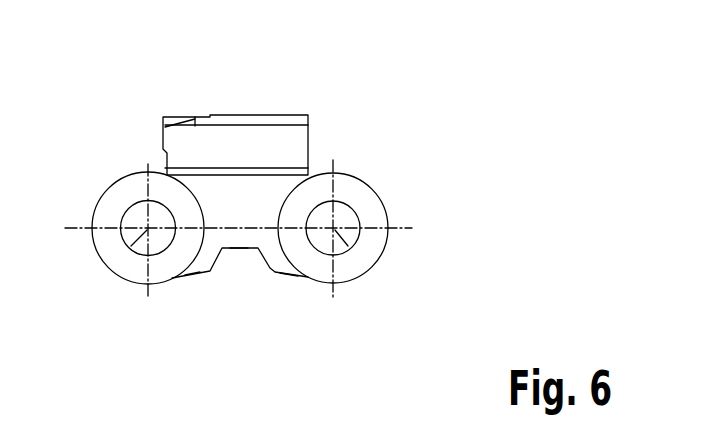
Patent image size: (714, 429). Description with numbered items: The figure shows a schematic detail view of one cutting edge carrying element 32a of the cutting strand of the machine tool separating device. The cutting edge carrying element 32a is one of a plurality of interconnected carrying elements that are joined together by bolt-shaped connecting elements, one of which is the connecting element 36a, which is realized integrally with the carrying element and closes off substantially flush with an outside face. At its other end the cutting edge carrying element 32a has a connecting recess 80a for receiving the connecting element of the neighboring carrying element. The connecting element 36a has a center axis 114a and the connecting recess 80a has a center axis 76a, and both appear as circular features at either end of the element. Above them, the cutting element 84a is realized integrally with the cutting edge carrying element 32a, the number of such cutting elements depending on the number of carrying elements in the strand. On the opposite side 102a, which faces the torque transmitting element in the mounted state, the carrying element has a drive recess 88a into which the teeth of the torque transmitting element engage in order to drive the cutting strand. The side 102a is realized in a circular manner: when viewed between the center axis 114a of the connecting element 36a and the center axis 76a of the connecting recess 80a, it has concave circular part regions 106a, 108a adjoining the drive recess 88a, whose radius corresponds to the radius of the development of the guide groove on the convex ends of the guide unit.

The cutting element 84a is at (267, 122).
The cutting edge carrying element 32a is at (345, 176).
The connecting recess 80a is at (356, 210).
The center axis of the connecting recess 76a is at (360, 250).
The center axis of the connecting element 114a is at (127, 249).
The connecting element 36a is at (159, 241).
The drive recess 88a is at (260, 263).
The side of the cutting edge carrying element 102a is at (238, 288).
The circular part region 106a is at (192, 288).
The circular part region 108a is at (300, 288).